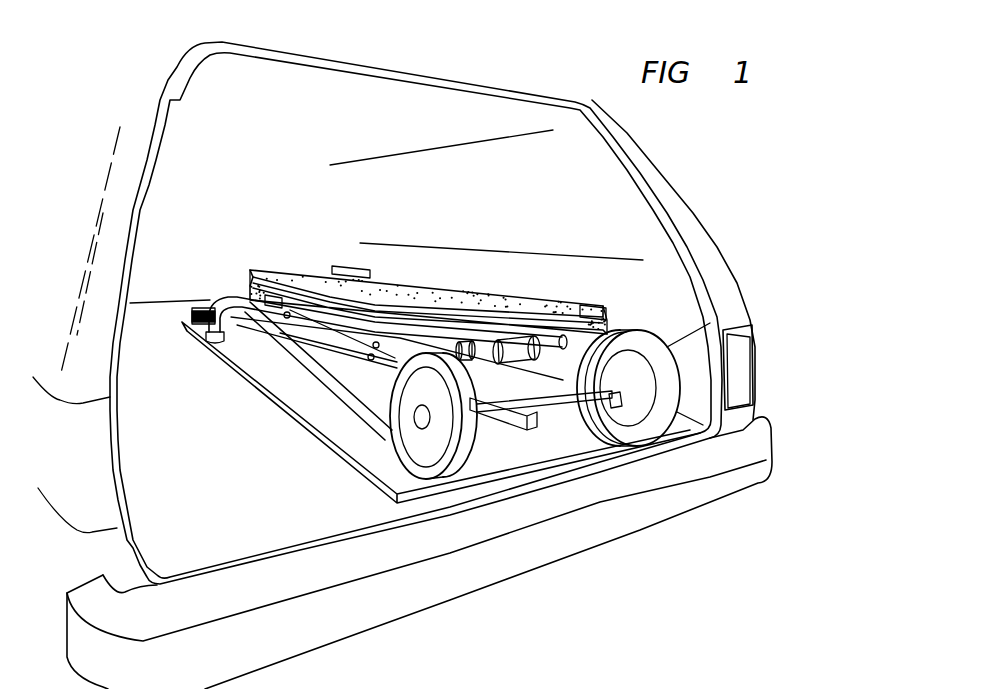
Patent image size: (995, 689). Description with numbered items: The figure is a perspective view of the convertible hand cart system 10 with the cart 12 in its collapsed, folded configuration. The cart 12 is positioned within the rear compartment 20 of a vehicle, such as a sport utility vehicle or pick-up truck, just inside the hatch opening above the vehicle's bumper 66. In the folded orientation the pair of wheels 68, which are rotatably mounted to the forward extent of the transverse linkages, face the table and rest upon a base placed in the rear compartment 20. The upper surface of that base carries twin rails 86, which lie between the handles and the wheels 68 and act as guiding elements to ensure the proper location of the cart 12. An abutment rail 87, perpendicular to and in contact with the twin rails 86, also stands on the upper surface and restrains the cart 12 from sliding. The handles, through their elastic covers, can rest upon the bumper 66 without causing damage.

The convertible hand cart system 10 is at (720, 193).
The cart 12 is at (537, 412).
The rear compartment 20 is at (330, 190).
The bumper 66 is at (690, 462).
The wheels 68 is at (722, 318).
The twin rails 86 is at (375, 405).
The abutment rail 87 is at (213, 307).